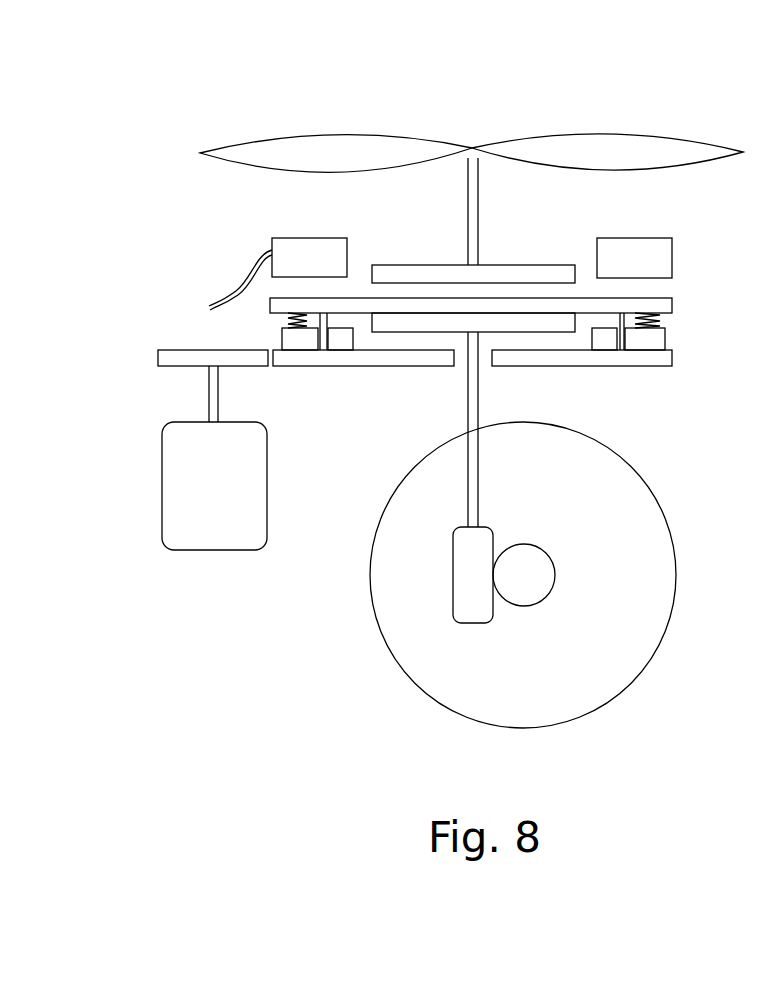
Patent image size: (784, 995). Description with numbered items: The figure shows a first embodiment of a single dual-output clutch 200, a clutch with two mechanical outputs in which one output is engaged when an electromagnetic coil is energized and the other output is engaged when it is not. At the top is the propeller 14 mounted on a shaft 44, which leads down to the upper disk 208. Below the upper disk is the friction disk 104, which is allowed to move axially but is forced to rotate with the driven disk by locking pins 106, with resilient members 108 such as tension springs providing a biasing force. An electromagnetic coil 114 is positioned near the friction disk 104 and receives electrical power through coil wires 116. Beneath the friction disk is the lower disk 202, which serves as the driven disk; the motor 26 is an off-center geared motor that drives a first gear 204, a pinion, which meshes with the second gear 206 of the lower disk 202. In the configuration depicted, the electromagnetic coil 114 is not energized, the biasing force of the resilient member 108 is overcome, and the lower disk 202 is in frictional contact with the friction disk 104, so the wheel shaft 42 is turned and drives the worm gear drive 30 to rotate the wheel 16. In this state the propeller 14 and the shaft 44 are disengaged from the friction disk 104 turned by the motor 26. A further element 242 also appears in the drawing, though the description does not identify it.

The single dual-output clutch 200 is at (220, 90).
The propeller 14 is at (686, 137).
The shaft 44 is at (480, 213).
The upper disk 208 is at (546, 264).
The electromagnetic coil 114 is at (295, 238).
The coil wires 116 is at (233, 293).
The friction disk 104 is at (673, 303).
The resilient member 108 is at (290, 317).
The locking pins 106 is at (331, 330).
The lower disk 202 is at (561, 333).
The second gear 206 is at (302, 368).
The first gear 204 is at (243, 368).
The support post 242 is at (208, 385).
The motor 26 is at (267, 500).
The wheel shaft 42 is at (480, 413).
The worm gear drive 30 is at (452, 580).
The wheel 16 is at (662, 648).